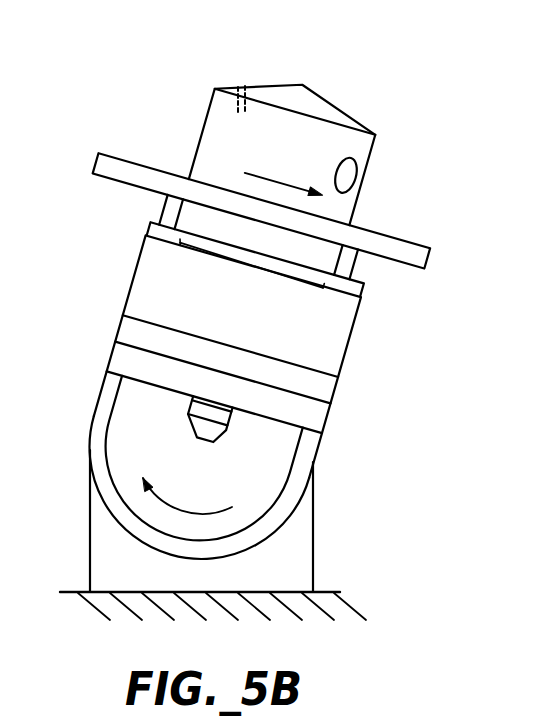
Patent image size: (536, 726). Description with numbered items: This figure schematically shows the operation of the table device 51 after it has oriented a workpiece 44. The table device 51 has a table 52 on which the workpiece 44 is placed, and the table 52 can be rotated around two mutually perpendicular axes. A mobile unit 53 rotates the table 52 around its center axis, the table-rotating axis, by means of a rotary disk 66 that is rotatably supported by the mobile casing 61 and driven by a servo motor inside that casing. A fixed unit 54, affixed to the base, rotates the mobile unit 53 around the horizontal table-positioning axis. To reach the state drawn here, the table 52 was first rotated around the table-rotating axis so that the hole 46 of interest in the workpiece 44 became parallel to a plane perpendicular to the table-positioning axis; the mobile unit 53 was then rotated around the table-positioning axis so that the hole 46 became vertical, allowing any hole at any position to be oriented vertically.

The table device 51 is at (118, 62).
The workpiece 44 is at (207, 157).
The hole 46 is at (232, 85).
The table 52 is at (138, 178).
The rotary disk 66 is at (197, 253).
The mobile unit 53 is at (138, 312).
The mobile casing 61 is at (98, 438).
The fixed unit 54 is at (297, 540).